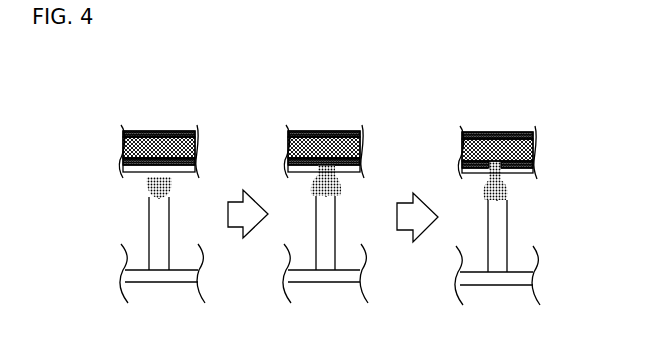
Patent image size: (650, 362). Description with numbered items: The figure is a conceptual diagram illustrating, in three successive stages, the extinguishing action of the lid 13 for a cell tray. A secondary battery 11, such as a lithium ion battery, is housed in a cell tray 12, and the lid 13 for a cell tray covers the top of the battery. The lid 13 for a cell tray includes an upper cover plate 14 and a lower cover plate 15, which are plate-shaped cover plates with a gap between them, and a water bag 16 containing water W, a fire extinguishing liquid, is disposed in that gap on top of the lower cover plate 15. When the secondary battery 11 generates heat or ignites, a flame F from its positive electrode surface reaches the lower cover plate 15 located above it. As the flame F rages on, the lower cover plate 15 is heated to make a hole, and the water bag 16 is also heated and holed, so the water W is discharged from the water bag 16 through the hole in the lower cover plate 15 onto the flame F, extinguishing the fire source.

The secondary battery 11 is at (149, 222).
The cell tray 12 is at (162, 289).
The lid for a cell tray 13 is at (180, 106).
The upper cover plate 14 is at (132, 129).
The lower cover plate 15 is at (125, 177).
The water bag 16 is at (124, 149).
The water W is at (196, 152).
The flame F is at (171, 191).